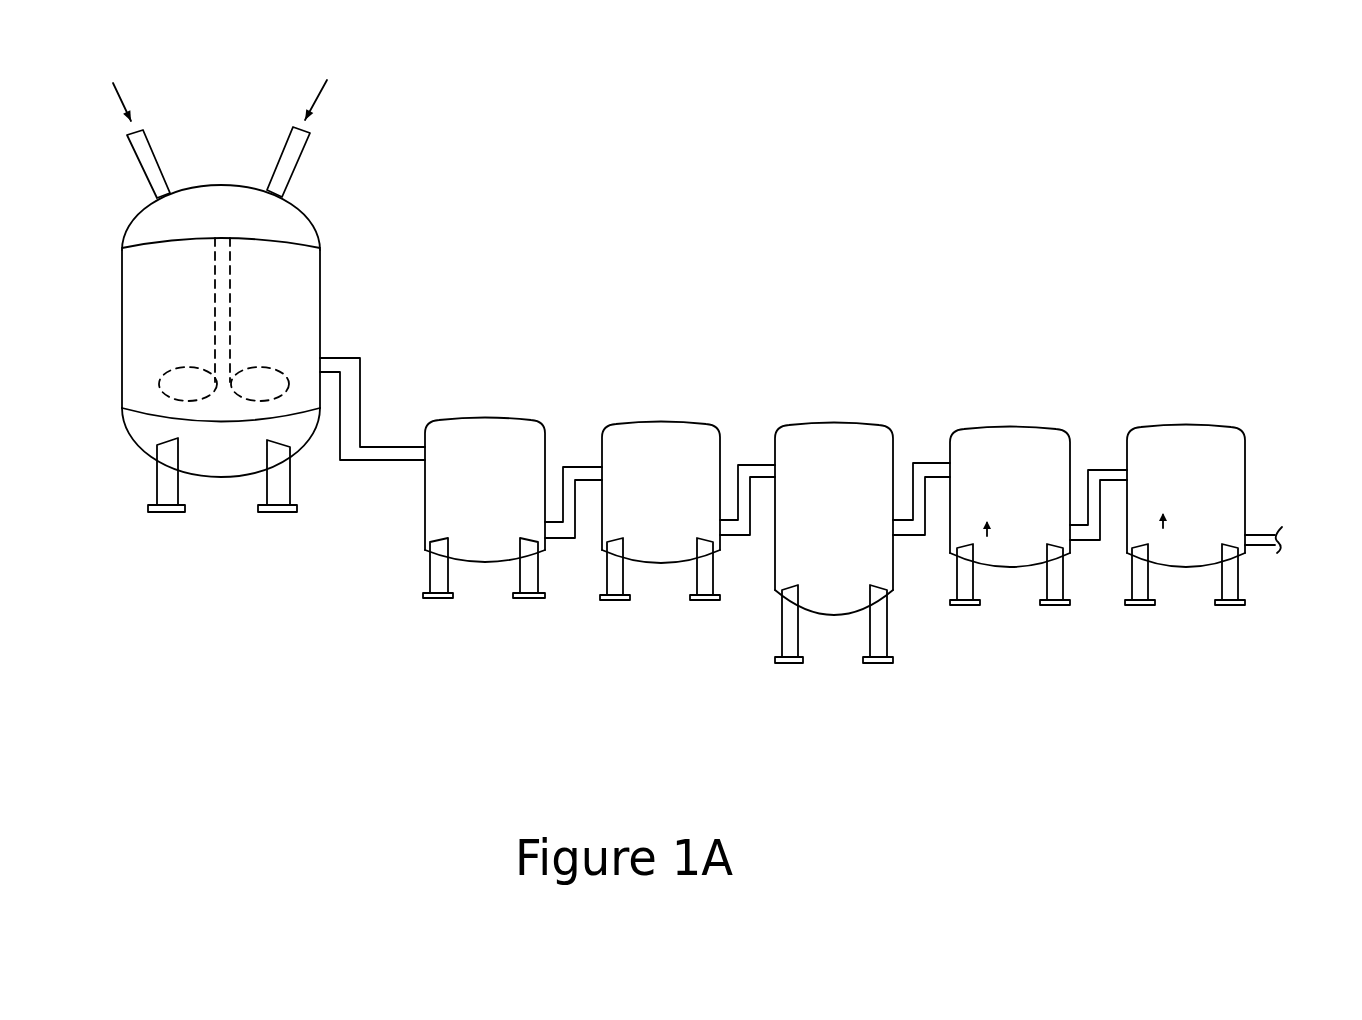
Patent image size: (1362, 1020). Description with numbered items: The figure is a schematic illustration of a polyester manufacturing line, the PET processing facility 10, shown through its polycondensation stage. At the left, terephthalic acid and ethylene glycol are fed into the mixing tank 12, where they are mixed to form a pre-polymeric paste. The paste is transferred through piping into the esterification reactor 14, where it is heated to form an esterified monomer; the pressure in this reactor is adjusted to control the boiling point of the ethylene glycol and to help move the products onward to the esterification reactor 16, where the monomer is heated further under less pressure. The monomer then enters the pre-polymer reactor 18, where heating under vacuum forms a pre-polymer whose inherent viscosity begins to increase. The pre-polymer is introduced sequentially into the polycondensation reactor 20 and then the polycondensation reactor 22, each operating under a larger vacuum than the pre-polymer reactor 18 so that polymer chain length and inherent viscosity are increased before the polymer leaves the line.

The PET processing facility 10 is at (850, 163).
The mixing tank 12 is at (320, 288).
The esterification reactor 14 is at (503, 418).
The esterification reactor 16 is at (677, 420).
The pre-polymer reactor 18 is at (847, 423).
The polycondensation reactor 20 is at (1018, 423).
The polycondensation reactor 22 is at (1178, 423).